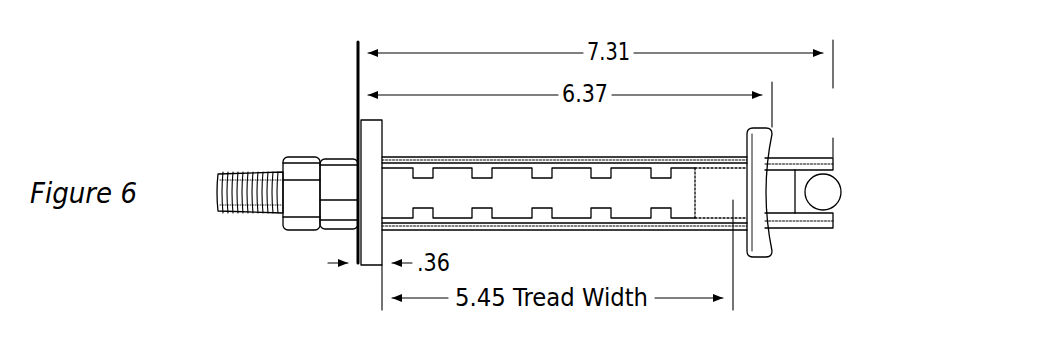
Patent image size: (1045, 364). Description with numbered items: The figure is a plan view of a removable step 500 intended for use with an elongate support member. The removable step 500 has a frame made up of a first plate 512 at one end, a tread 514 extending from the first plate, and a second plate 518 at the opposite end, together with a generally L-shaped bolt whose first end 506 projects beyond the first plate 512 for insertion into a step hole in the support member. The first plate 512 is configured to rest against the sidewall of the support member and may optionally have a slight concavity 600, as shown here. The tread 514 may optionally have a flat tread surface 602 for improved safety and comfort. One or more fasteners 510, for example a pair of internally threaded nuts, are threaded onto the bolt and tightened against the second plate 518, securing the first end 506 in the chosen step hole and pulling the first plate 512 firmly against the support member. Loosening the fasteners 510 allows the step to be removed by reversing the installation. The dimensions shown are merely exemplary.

The removable step 500 is at (574, 188).
The first end 506 is at (841, 191).
The fasteners 510 is at (353, 152).
The first plate 512 is at (772, 258).
The tread 514 is at (572, 225).
The second plate 518 is at (370, 257).
The slight concavity 600 is at (835, 163).
The flat tread surface 602 is at (577, 193).